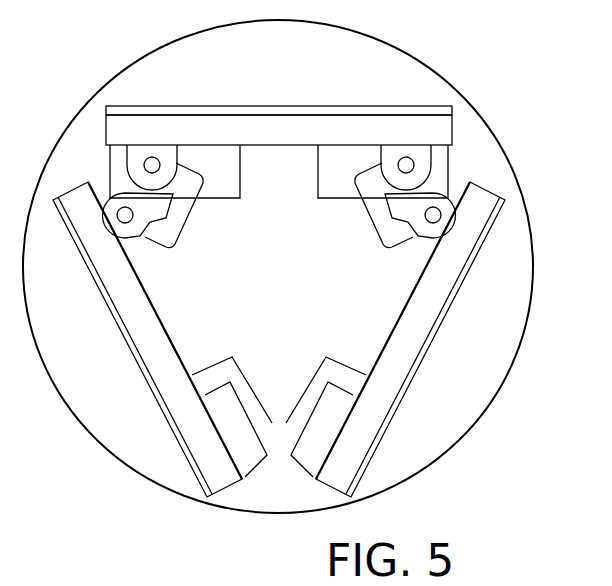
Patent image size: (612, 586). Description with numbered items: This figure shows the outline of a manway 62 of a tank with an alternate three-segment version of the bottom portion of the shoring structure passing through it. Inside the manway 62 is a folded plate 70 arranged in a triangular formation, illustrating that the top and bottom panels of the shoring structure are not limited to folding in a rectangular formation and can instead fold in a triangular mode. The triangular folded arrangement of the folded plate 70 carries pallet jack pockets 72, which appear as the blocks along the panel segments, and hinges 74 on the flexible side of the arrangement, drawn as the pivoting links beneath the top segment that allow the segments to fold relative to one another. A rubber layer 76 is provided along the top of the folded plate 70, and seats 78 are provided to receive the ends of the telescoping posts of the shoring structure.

The manway 62 is at (493, 125).
The folded plate 70 is at (359, 107).
The pallet jack pockets 72 is at (328, 199).
The hinges 74 is at (178, 208).
The rubber layer 76 is at (290, 106).
The seats 78 is at (354, 368).